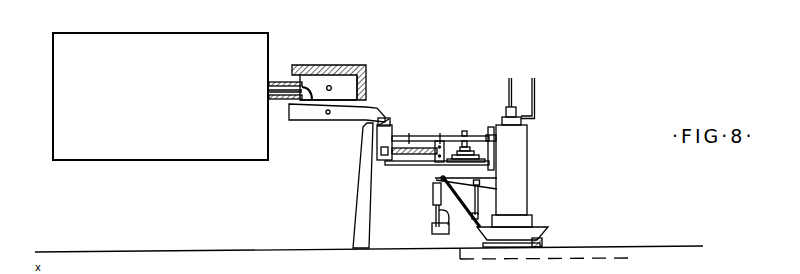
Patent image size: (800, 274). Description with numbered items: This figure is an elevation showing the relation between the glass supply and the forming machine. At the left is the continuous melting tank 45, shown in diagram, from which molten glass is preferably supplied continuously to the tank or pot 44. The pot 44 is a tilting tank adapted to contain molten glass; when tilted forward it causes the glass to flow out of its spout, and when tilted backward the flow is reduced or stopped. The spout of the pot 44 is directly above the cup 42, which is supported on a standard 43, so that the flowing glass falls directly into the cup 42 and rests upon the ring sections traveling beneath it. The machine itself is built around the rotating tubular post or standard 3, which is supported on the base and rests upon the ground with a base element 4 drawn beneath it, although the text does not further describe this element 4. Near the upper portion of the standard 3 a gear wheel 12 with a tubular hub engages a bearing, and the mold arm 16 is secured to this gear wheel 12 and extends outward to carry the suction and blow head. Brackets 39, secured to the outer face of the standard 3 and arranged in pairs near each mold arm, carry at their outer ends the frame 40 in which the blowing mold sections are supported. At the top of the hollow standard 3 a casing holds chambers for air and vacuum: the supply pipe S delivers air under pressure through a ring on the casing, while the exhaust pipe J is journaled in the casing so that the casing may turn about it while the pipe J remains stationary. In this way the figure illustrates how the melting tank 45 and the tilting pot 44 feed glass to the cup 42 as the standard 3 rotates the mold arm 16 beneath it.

The continuous melting tank 45 is at (160, 96).
The tank or pot 44 is at (341, 116).
The cup 42 is at (389, 119).
The standard 43 is at (364, 200).
The mold arm 16 is at (419, 148).
The gear wheel 12 is at (490, 135).
The rotating tubular post or standard 3 is at (518, 151).
The exhaust pipe J is at (508, 93).
The supply pipe S is at (535, 95).
The base block 4 is at (543, 238).
The brackets 39 is at (487, 182).
The frame 40 is at (434, 207).